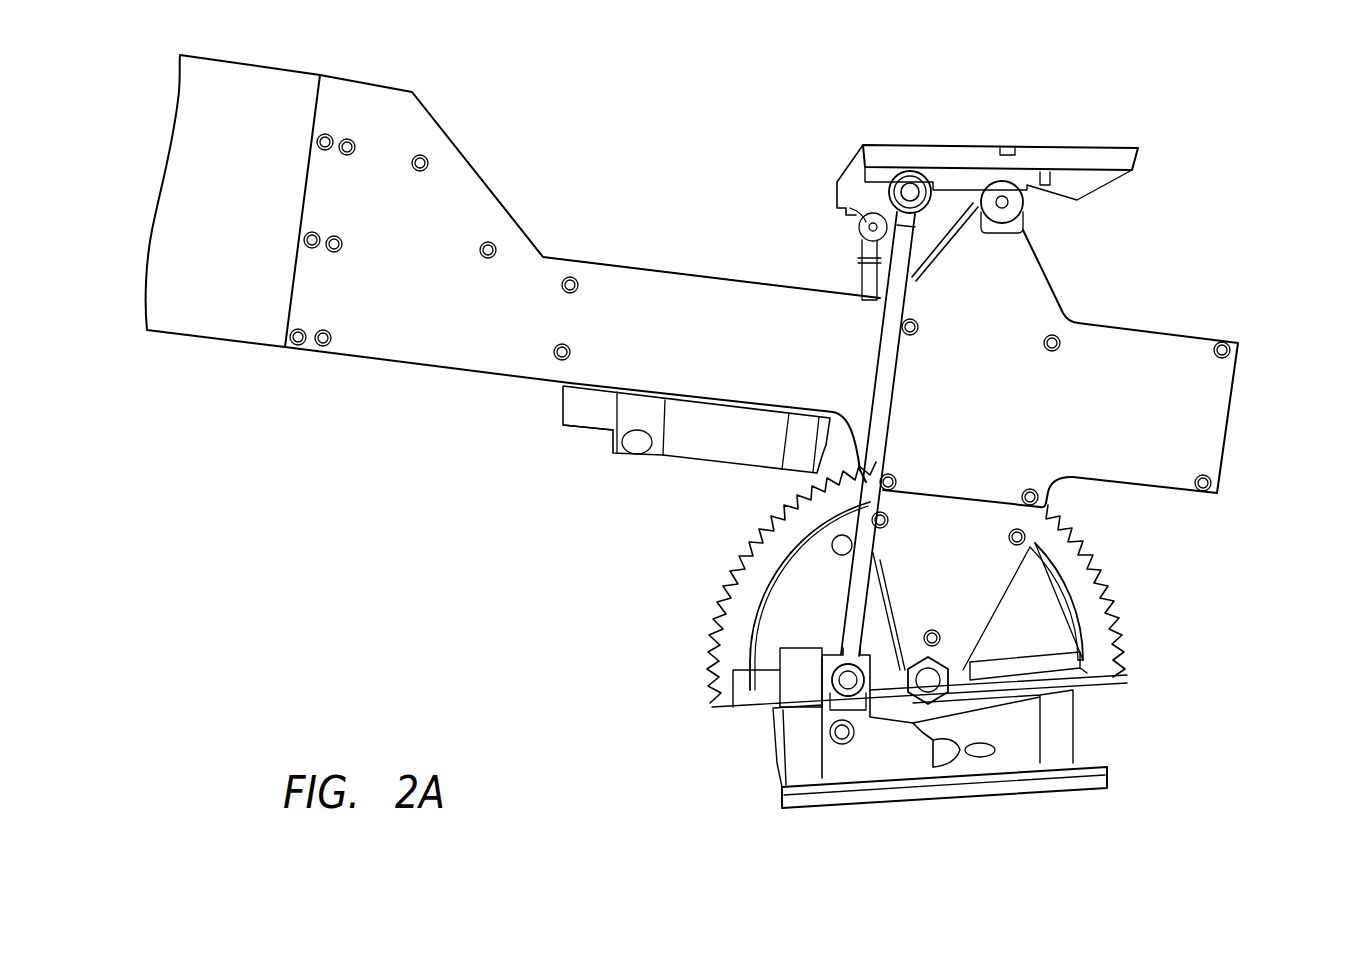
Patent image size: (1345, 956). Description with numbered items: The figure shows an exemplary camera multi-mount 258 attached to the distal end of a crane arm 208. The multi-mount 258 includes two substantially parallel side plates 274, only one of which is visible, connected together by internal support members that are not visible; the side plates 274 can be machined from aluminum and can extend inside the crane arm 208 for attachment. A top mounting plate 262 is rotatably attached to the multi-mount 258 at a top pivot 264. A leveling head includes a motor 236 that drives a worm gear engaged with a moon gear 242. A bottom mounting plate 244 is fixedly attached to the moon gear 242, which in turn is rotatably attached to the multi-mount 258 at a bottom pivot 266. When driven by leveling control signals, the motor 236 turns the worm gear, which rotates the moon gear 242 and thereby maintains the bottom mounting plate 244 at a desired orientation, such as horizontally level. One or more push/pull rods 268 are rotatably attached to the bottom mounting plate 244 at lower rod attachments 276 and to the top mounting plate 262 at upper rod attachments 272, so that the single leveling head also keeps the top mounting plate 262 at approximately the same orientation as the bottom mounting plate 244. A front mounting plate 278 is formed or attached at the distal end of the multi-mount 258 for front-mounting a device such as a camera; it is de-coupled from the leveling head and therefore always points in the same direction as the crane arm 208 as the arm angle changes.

The crane arm 208 is at (250, 323).
The side plates 274 is at (442, 343).
The camera multi-mount 258 is at (615, 210).
The motor 236 is at (740, 465).
The moon gear 242 is at (712, 647).
The front mounting plate 278 is at (1230, 420).
The top mounting plate 262 is at (1085, 148).
The top pivot 264 is at (1023, 200).
The upper rod attachments 272 is at (910, 183).
The push/pull rods 268 is at (883, 337).
The lower rod attachments 276 is at (845, 678).
The bottom pivot 266 is at (950, 683).
The bottom mounting plate 244 is at (1010, 795).